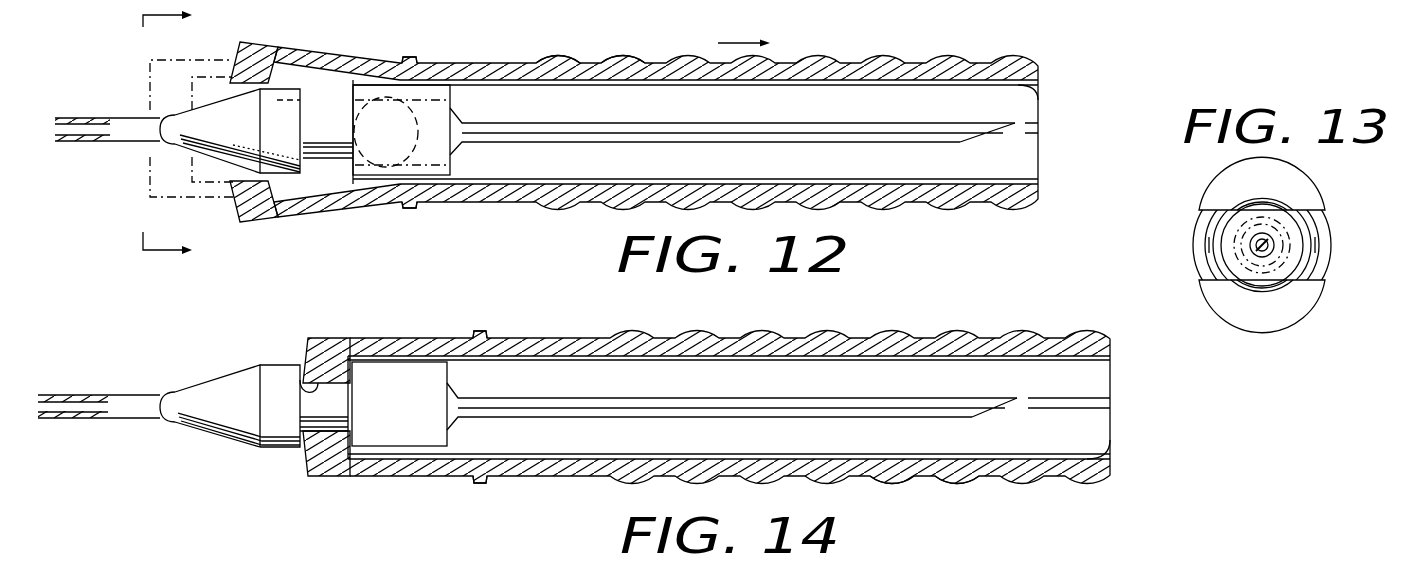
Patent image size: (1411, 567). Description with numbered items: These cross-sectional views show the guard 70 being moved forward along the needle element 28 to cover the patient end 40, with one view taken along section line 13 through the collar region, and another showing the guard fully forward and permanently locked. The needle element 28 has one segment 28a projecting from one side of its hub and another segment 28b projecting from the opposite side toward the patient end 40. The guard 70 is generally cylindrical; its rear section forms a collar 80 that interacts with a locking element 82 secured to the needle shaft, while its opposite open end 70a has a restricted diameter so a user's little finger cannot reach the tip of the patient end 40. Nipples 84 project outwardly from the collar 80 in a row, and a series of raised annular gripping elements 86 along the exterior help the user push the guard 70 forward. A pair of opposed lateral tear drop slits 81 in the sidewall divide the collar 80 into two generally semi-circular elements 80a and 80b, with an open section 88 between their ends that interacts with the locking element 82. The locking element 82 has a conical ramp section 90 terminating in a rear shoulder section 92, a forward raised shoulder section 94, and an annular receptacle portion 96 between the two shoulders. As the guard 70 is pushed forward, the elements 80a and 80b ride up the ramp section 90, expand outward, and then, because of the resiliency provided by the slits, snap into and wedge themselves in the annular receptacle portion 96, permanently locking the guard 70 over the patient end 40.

In FIG. 12, the section line 13 is at (143, 135).
In FIG. 12, the needle element 28 is at (496, 150).
In FIG. 13, the needle element 28 is at (1273, 241).
In FIG. 14, the needle element 28 is at (537, 424).
In FIG. 12, the first needle segment 28a is at (74, 142).
In FIG. 14, the first needle segment 28a is at (83, 420).
In FIG. 12, the second needle segment 28b is at (715, 128).
In FIG. 14, the second needle segment 28b is at (770, 407).
In FIG. 12, the patient end 40 is at (928, 133).
In FIG. 14, the patient end 40 is at (887, 408).
In FIG. 12, the guard 70 is at (890, 60).
In FIG. 14, the guard 70 is at (1029, 320).
In FIG. 12, the open end 70a is at (1040, 96).
In FIG. 14, the open end 70a is at (1110, 440).
In FIG. 12, the collar 80 is at (313, 50).
In FIG. 13, the collar 80 is at (1236, 307).
In FIG. 14, the collar 80 is at (380, 477).
In FIG. 12, the first semi-circular collar element 80a is at (248, 40).
In FIG. 13, the first semi-circular collar element 80a is at (1213, 188).
In FIG. 14, the first semi-circular collar element 80a is at (327, 343).
In FIG. 12, the second semi-circular collar element 80b is at (252, 214).
In FIG. 13, the second semi-circular collar element 80b is at (1300, 307).
In FIG. 14, the second semi-circular collar element 80b is at (325, 470).
In FIG. 12, the tear drop slits 81 is at (452, 100).
In FIG. 12, the locking element 82 is at (298, 190).
In FIG. 13, the locking element 82 is at (1299, 258).
In FIG. 14, the locking element 82 is at (250, 353).
In FIG. 12, the nipples 84 is at (410, 210).
In FIG. 14, the nipples 84 is at (480, 487).
In FIG. 12, the raised annular gripping elements 86 is at (617, 63).
In FIG. 14, the raised annular gripping elements 86 is at (950, 477).
In FIG. 12, the open section 88 is at (245, 97).
In FIG. 13, the open section 88 is at (1267, 288).
In FIG. 14, the open section 88 is at (293, 385).
In FIG. 12, the ramp section 90 is at (213, 168).
In FIG. 14, the ramp section 90 is at (230, 440).
In FIG. 12, the rear shoulder section 92 is at (338, 190).
In FIG. 14, the rear shoulder section 92 is at (277, 447).
In FIG. 12, the raised shoulder section 94 is at (373, 90).
In FIG. 14, the raised shoulder section 94 is at (408, 370).
In FIG. 12, the annular receptacle portion 96 is at (328, 134).
In FIG. 14, the annular receptacle portion 96 is at (335, 410).